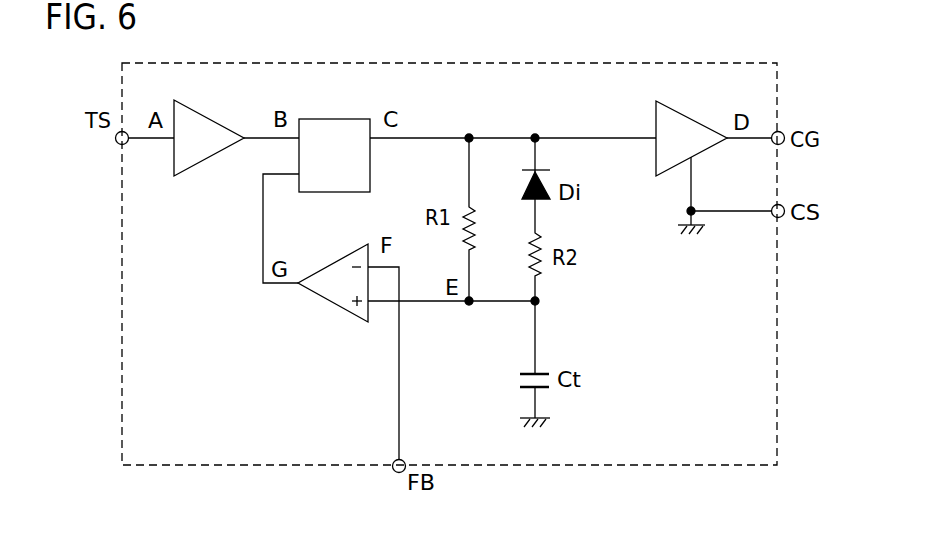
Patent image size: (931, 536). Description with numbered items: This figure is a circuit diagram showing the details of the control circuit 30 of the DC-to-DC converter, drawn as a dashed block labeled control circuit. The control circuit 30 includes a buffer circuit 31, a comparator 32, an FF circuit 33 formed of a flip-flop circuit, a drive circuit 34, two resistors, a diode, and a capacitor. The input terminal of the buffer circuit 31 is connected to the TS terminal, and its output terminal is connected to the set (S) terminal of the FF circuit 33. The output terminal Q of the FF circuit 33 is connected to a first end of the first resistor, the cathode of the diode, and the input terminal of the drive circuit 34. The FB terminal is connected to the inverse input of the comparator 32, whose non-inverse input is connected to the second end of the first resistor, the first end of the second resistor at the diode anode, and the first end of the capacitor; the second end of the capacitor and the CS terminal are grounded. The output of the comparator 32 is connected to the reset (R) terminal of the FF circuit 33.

The control circuit 30 is at (777, 343).
The buffer circuit 31 is at (197, 165).
The comparator 32 is at (322, 296).
The FF circuit 33 is at (370, 176).
The drive circuit 34 is at (655, 160).